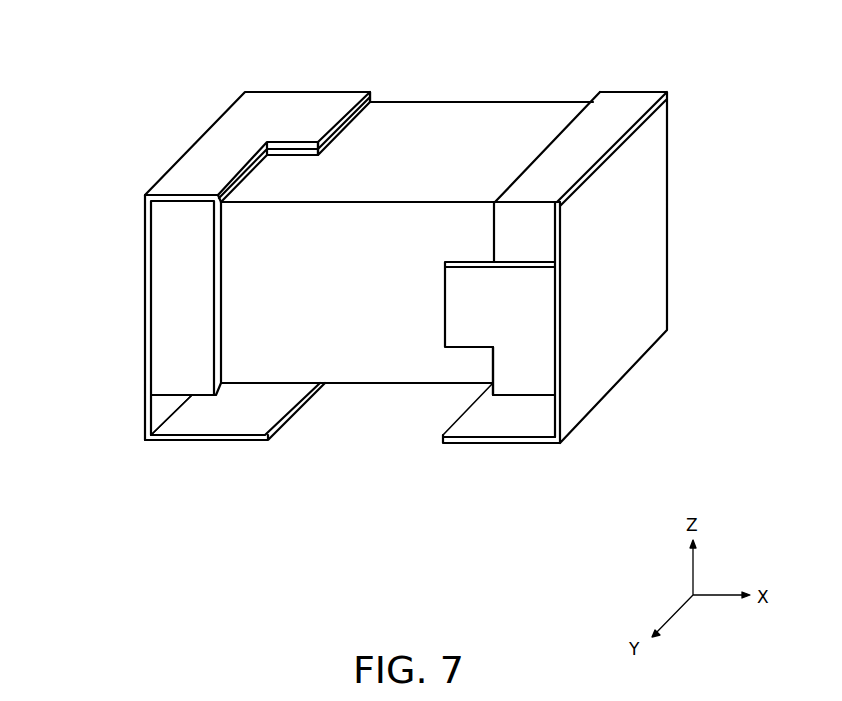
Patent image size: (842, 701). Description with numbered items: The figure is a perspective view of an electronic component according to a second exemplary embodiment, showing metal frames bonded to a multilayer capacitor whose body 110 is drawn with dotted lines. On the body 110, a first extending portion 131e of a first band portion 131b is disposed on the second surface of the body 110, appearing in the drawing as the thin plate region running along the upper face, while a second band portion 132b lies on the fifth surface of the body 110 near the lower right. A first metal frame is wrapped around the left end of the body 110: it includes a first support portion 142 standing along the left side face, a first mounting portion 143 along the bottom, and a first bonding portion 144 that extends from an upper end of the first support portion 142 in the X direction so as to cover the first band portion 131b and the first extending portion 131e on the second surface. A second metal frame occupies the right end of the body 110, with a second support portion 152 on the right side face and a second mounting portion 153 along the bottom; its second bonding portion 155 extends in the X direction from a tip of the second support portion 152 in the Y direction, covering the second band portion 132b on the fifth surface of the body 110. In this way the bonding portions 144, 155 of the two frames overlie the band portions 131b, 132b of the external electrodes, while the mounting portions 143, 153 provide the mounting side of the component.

The body 110 is at (447, 110).
The first extending portion 131e is at (345, 132).
The first band portion 131b is at (183, 373).
The second band portion 132b is at (515, 373).
The first support portion 142 is at (162, 272).
The first mounting portion 143 is at (172, 445).
The first bonding portion 144 is at (297, 123).
The second support portion 152 is at (610, 250).
The second mounting portion 153 is at (543, 445).
The second bonding portion 155 is at (468, 317).